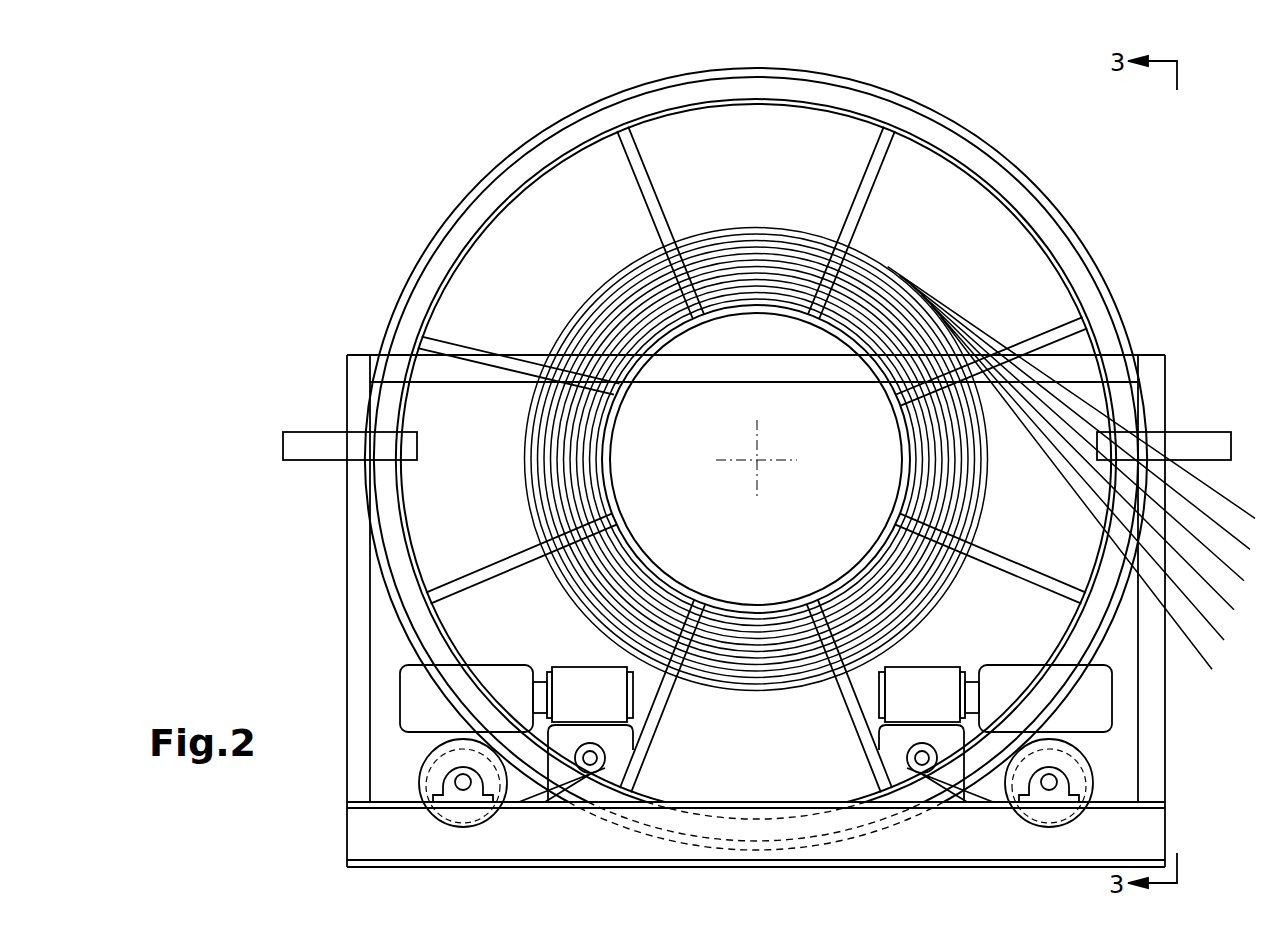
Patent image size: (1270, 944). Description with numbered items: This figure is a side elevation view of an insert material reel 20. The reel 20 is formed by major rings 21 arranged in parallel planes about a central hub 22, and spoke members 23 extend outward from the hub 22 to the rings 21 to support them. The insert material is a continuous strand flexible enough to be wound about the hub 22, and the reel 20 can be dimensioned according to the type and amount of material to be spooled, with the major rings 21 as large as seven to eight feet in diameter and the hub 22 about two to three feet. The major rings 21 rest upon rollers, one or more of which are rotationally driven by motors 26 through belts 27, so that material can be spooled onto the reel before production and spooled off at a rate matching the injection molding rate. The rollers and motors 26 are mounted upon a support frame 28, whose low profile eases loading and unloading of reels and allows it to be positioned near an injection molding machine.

The reel 20 is at (583, 96).
The major rings 21 is at (524, 150).
The hub 22 is at (607, 455).
The spoke members 23 is at (478, 575).
The motors 26 is at (423, 712).
The belts 27 is at (537, 803).
The support frame 28 is at (583, 838).